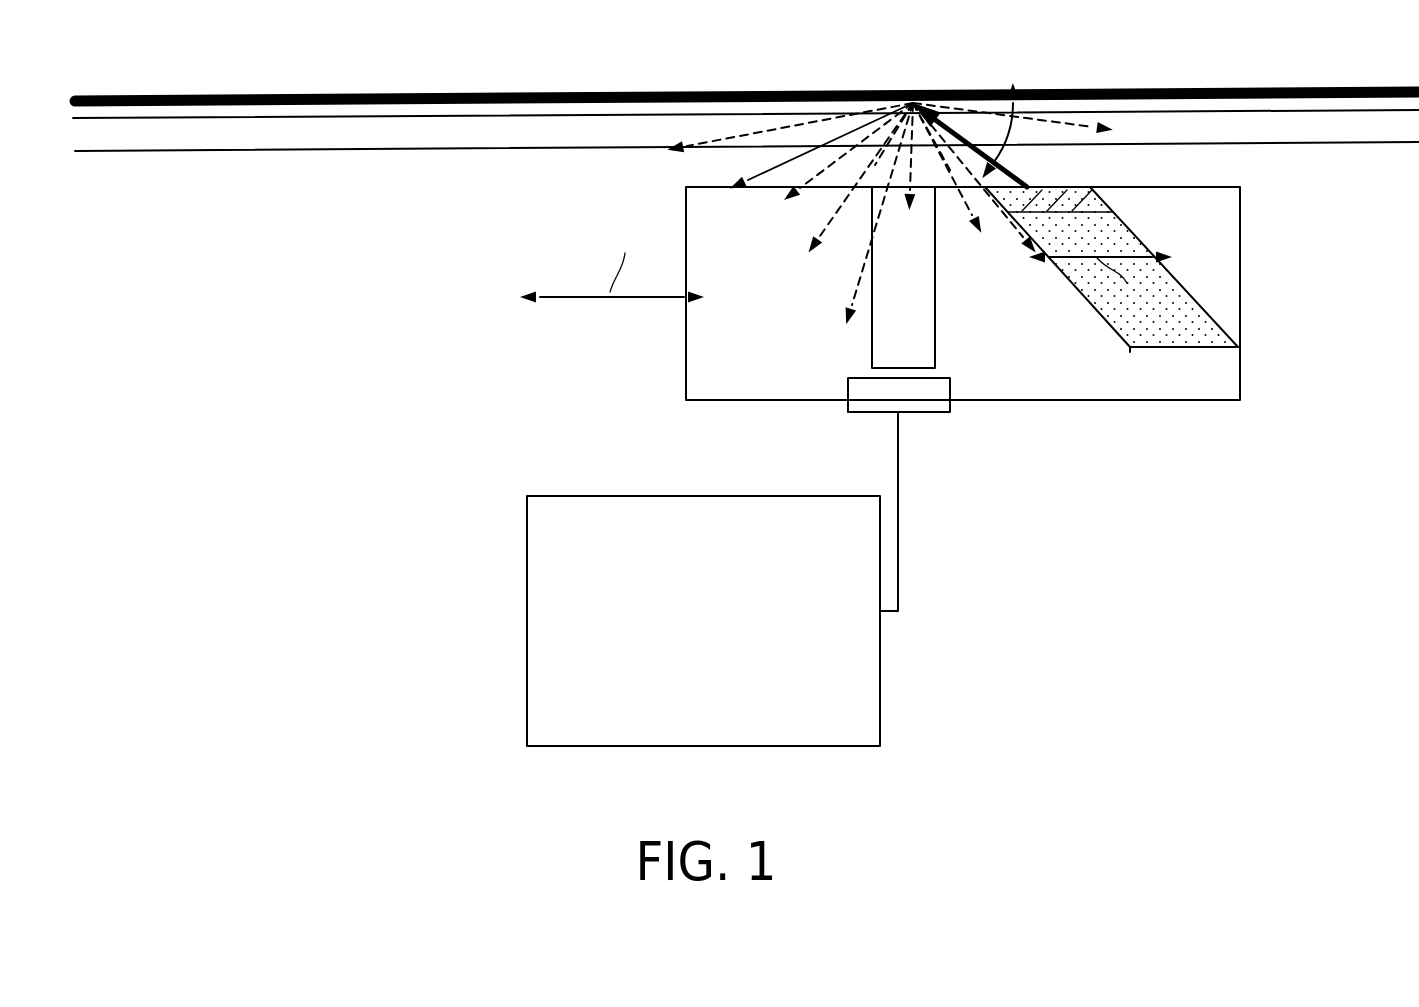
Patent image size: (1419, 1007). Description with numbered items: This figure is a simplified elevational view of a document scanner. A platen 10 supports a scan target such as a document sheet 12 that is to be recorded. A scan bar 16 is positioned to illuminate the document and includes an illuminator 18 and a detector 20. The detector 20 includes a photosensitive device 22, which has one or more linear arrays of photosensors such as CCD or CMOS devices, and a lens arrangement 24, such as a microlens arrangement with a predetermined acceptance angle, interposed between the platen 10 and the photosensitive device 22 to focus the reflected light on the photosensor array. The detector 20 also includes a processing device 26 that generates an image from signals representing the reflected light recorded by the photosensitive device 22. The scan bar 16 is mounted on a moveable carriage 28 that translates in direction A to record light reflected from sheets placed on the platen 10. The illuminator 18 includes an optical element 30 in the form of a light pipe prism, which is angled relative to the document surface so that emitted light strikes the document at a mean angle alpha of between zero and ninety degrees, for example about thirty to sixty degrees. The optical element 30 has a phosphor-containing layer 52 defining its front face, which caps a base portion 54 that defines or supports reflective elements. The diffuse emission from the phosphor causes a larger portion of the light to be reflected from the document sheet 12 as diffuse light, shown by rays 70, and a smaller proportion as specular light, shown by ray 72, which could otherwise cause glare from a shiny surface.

The platen 10 is at (263, 140).
The document sheet 12 is at (258, 100).
The scan bar 16 is at (1262, 507).
The illuminator 18 is at (1146, 261).
The detector 20 is at (910, 399).
The photosensitive device 22 is at (850, 406).
The lens arrangement 24 is at (870, 331).
The processing device 26 is at (537, 616).
The moveable carriage 28 is at (695, 358).
The optical element 30 is at (1132, 333).
The layer 52 is at (1060, 198).
The base portion 54 is at (1140, 244).
The rays 70 is at (792, 188).
The ray 72 is at (883, 145).